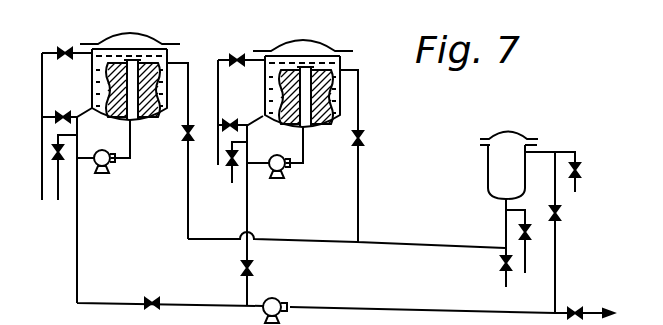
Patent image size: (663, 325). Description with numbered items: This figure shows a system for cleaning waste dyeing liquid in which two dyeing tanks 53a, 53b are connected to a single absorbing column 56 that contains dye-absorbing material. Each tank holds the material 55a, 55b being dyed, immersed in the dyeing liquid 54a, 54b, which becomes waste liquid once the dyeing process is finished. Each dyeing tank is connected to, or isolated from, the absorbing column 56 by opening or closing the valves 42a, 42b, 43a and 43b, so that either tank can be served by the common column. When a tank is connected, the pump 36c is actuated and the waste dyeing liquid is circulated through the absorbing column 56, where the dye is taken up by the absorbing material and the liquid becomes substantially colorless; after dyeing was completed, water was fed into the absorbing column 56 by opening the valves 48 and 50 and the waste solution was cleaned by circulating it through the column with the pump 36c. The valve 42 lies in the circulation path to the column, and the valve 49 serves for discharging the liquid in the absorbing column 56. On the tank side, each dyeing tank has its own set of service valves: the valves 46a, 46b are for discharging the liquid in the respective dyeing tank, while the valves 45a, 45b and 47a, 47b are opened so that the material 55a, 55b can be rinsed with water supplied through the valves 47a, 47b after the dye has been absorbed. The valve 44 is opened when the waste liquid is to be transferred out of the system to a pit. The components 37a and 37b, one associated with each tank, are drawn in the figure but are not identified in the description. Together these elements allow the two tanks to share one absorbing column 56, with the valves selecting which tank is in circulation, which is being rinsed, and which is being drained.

The pump 36c is at (290, 305).
The pump 37a is at (103, 175).
The pump 37b is at (278, 180).
The valve 42 is at (560, 213).
The valve 42a is at (165, 289).
The valve 42b is at (270, 281).
The valve 43a is at (186, 146).
The valve 43b is at (365, 138).
The valve 44 is at (578, 312).
The valve 45a is at (65, 50).
The valve 45b is at (234, 57).
The valve 46a is at (64, 114).
The valve 46b is at (243, 107).
The valve 47a is at (56, 166).
The valve 47b is at (231, 170).
The valve 48 is at (500, 265).
The valve 49 is at (528, 241).
The valve 50 is at (580, 170).
The dyeing tank 53a is at (109, 33).
The dyeing tank 53b is at (282, 41).
The dyeing liquid 54a is at (164, 119).
The dyeing liquid 54b is at (332, 122).
The material 55a is at (146, 60).
The material 55b is at (318, 66).
The absorbing column 56 is at (505, 133).